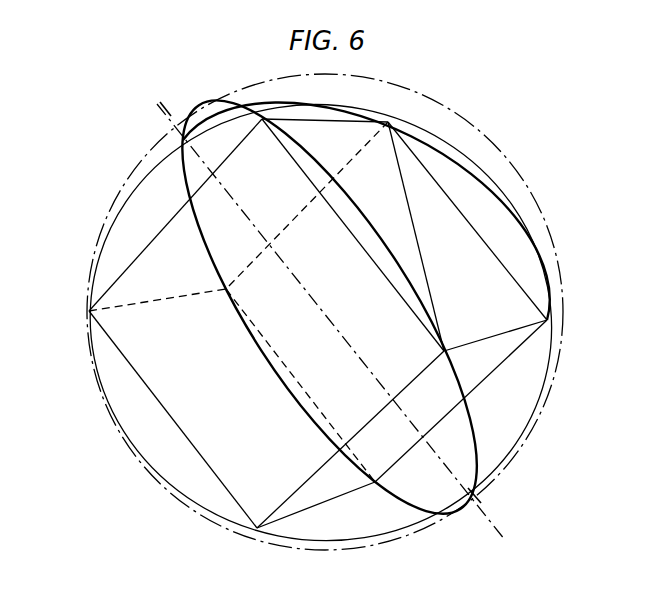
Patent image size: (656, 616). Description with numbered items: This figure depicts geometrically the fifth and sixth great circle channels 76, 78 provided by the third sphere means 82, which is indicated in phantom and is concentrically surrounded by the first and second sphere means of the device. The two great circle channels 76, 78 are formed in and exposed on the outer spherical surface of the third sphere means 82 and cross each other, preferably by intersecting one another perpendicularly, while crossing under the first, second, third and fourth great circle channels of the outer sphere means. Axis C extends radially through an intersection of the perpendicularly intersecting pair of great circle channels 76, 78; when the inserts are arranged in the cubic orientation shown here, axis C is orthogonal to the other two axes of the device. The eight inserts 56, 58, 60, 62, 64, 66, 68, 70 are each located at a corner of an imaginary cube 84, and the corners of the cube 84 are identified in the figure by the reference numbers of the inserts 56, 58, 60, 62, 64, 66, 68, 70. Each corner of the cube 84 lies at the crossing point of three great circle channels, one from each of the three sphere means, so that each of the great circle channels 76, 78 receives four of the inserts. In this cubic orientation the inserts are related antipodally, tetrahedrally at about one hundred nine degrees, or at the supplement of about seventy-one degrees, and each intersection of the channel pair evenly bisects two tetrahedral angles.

The axis C is at (164, 112).
The insert 56 is at (89, 311).
The insert 58 is at (261, 118).
The insert 60 is at (548, 320).
The insert 62 is at (377, 482).
The insert 64 is at (257, 530).
The insert 66 is at (443, 350).
The insert 68 is at (389, 120).
The insert 70 is at (229, 290).
The fifth great circle channel 76 is at (474, 418).
The sixth great circle channel 78 is at (544, 389).
The third sphere means 82 is at (520, 180).
The imaginary cube 84 is at (186, 206).